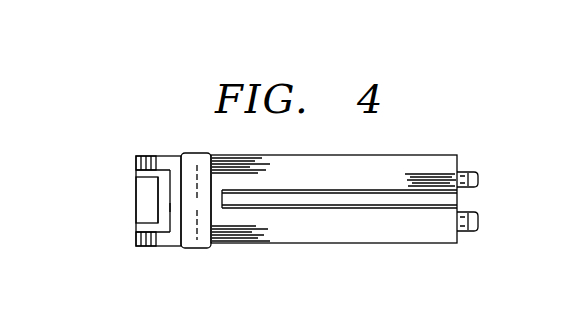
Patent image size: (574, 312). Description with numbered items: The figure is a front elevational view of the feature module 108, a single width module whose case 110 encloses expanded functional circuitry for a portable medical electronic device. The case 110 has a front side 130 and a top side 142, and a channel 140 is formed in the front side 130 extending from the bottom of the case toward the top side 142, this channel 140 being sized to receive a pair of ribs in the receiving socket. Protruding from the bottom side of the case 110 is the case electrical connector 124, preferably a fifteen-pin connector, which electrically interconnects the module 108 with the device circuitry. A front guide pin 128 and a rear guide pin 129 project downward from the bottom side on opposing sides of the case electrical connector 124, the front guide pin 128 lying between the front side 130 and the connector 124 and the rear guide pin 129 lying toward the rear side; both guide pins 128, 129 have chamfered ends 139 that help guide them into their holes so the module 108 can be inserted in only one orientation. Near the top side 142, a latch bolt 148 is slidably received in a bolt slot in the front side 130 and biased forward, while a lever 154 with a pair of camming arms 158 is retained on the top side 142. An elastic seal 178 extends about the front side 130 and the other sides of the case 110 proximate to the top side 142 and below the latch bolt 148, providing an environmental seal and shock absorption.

The feature module 108 is at (423, 89).
The case 110 is at (238, 155).
The case electrical connector 124 is at (459, 205).
The front guide pin 128 is at (470, 232).
The rear guide pin 129 is at (466, 172).
The front side 130 is at (335, 155).
The chamfered ends 139 is at (479, 178).
The channel 140 is at (418, 177).
The top side 142 is at (136, 167).
The latch bolt 148 is at (170, 203).
The lever 154 is at (143, 208).
The camming arms 158 is at (158, 154).
The elastic seal 178 is at (192, 153).